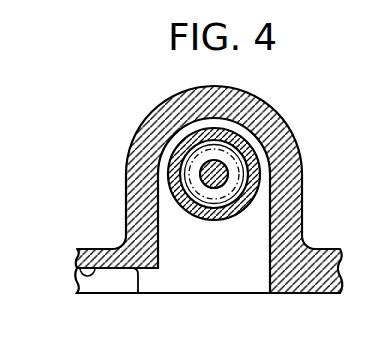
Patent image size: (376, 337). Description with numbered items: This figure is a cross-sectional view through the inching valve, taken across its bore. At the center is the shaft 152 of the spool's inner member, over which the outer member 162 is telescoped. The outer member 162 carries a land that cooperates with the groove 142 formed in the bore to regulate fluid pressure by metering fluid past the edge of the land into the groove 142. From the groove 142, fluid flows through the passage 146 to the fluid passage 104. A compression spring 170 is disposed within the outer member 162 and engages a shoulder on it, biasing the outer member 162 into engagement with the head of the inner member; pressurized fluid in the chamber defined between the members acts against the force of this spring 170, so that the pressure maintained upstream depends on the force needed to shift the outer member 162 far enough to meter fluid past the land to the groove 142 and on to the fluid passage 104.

The fluid passage 104 is at (77, 272).
The groove 142 is at (158, 201).
The passage 146 is at (150, 278).
The shaft 152 is at (227, 160).
The outer member 162 is at (190, 134).
The compression spring 170 is at (237, 177).